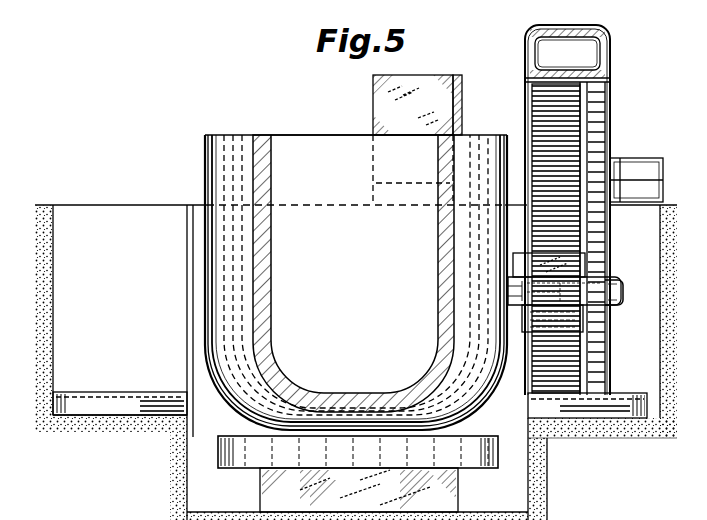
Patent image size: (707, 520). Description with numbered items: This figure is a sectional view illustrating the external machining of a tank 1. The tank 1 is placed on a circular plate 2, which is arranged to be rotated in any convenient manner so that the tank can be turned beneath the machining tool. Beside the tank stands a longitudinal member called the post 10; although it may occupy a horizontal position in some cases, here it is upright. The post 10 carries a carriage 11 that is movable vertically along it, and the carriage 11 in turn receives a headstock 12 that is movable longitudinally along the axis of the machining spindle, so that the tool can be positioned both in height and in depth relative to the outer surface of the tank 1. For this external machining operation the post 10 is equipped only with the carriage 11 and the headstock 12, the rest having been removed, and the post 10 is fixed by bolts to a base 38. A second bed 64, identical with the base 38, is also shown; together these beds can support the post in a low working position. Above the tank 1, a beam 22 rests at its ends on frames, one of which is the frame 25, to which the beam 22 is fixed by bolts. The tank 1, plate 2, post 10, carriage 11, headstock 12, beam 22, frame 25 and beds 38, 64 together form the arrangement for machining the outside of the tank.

The tank 1 is at (351, 273).
The circular plate 2 is at (237, 455).
The post 10 is at (532, 121).
The carriage 11 is at (518, 264).
The headstock 12 is at (619, 285).
The beam 22 is at (590, 53).
The frame 25 is at (420, 83).
The base 38 is at (636, 405).
The bed 64 is at (116, 403).